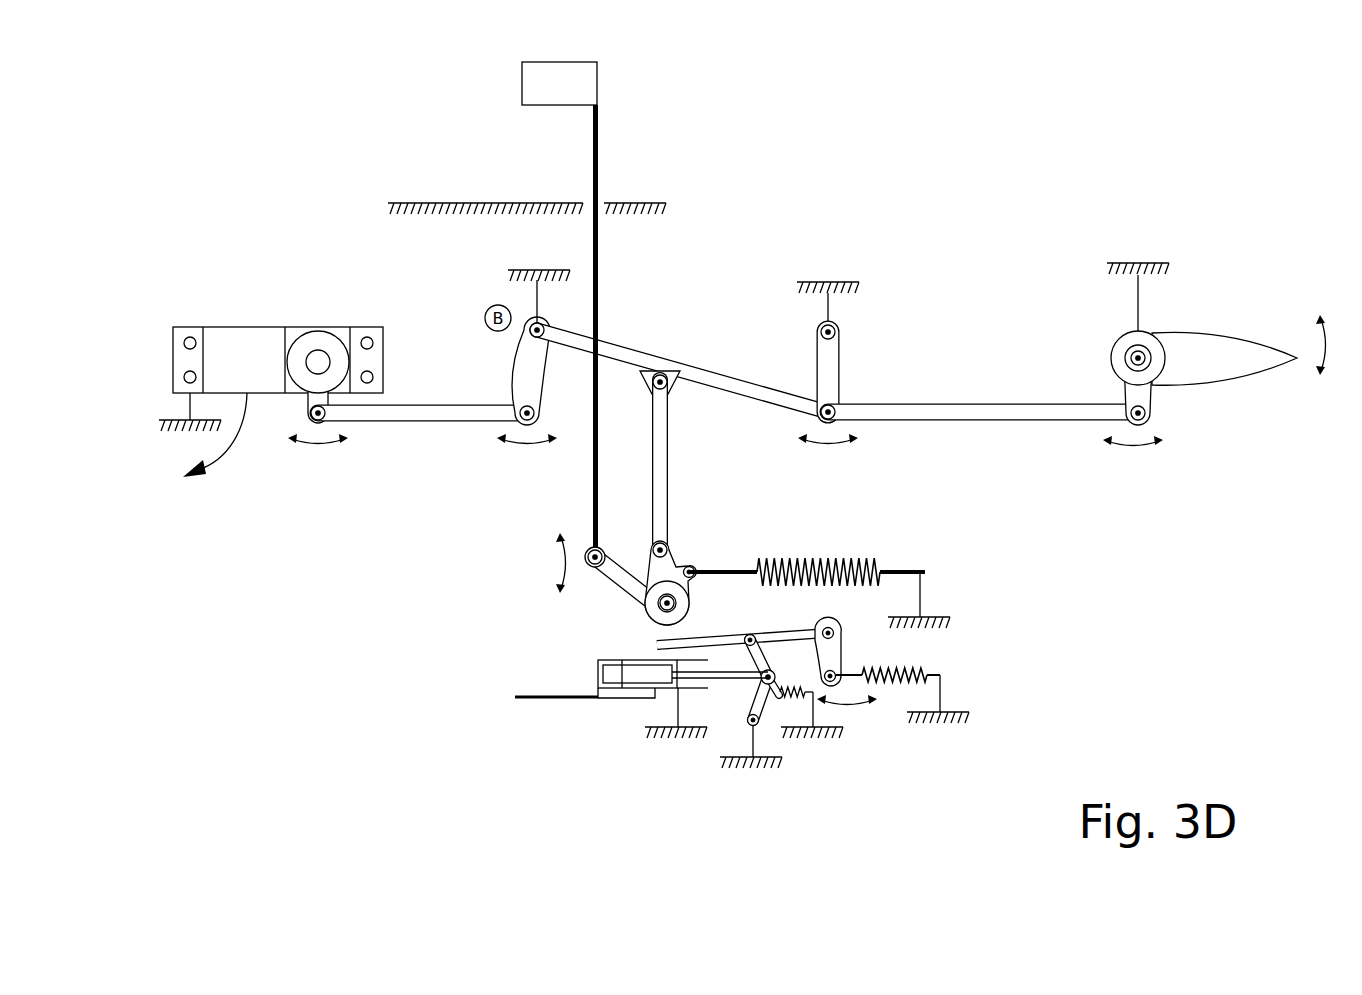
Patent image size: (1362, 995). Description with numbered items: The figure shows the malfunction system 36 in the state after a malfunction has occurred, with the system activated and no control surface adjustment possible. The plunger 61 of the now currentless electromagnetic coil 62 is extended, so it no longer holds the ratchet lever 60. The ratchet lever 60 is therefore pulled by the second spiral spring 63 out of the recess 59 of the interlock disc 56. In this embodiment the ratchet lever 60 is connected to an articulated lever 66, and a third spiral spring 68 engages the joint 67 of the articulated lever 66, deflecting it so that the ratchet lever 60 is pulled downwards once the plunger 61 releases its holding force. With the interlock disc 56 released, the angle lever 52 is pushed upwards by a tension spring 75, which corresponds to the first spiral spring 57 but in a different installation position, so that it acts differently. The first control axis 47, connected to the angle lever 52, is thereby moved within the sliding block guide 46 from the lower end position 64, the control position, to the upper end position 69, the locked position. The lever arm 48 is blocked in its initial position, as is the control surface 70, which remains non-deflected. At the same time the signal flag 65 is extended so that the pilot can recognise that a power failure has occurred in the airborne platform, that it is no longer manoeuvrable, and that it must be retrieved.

The malfunction system 36 is at (304, 183).
The sliding block guide 46 is at (531, 378).
The first control axis 47 is at (662, 368).
The lever arm 48 is at (826, 380).
The angle lever 52 is at (660, 422).
The interlock disc 56 is at (688, 607).
The first spiral spring 57 is at (820, 566).
The tension spring 75 is at (832, 557).
The recess 59 is at (648, 607).
The ratchet lever 60 is at (720, 644).
The plunger 61 is at (723, 680).
The electromagnetic coil 62 is at (610, 680).
The second spiral spring 63 is at (892, 682).
The lower end position 64 is at (506, 409).
The signal flag 65 is at (589, 96).
The articulated lever 66 is at (762, 658).
The joint 67 is at (780, 678).
The third spiral spring 68 is at (803, 700).
The upper end position 69 is at (548, 327).
The control surface 70 is at (1251, 335).